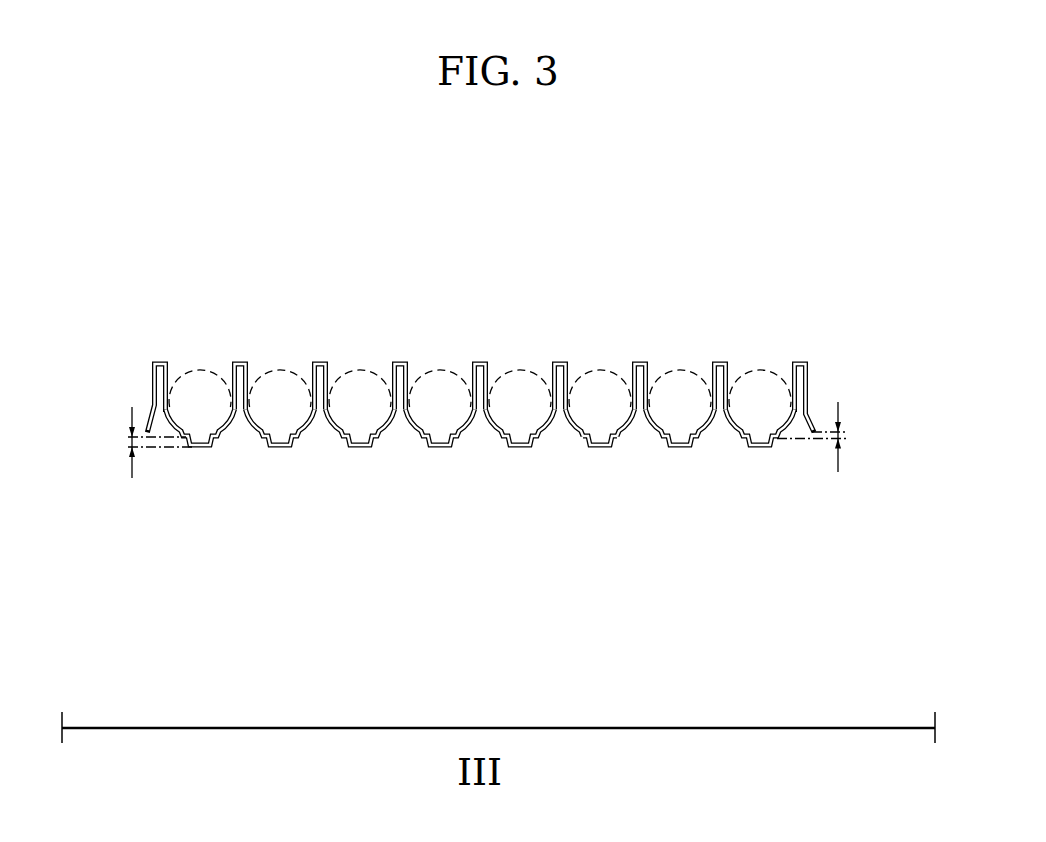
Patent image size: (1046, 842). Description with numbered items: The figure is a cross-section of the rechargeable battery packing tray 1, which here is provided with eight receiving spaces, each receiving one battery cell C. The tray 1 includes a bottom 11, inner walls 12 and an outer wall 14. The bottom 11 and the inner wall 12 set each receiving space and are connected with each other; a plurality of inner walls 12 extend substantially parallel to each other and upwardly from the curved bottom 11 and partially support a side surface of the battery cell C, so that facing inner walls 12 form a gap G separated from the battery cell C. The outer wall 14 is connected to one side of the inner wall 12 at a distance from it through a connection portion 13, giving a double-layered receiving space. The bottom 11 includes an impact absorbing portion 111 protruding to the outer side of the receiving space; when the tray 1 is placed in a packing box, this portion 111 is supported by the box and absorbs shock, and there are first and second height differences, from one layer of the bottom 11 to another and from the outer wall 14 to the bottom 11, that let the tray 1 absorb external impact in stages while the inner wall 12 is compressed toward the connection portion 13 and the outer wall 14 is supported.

The rechargeable battery packing tray 1 is at (495, 242).
The bottom 11 is at (666, 519).
The impact absorbing portion 111 is at (601, 449).
The inner wall 12 is at (313, 367).
The connection portion 13 is at (718, 364).
The outer wall 14 is at (807, 375).
The battery cell C is at (522, 370).
The gap G is at (228, 370).